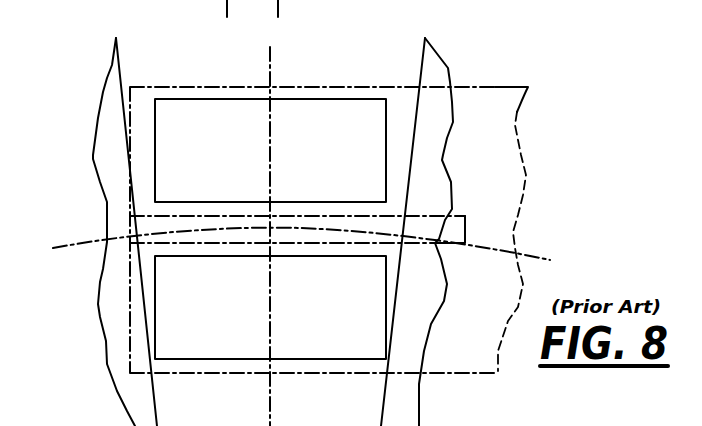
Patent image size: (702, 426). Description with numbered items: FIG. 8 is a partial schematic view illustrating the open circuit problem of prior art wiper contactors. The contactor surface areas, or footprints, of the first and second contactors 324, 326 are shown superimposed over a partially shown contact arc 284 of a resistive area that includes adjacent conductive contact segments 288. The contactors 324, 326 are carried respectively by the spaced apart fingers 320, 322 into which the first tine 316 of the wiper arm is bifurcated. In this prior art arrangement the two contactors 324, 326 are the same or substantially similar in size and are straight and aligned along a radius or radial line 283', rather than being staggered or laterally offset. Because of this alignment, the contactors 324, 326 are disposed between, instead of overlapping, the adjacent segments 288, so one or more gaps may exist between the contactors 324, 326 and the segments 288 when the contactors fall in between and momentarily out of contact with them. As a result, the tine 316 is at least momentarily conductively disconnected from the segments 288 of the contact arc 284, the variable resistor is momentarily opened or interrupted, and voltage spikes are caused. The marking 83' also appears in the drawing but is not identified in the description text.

The conductive contact segments 288 is at (111, 83).
The finger 320 is at (128, 152).
The contact arc 284 is at (70, 247).
The radial line 283' is at (306, 224).
The first tine 316 is at (505, 212).
The finger 322 is at (128, 308).
The first contactor 324 is at (235, 161).
The second contactor 326 is at (240, 324).
The component 83' is at (682, 414).